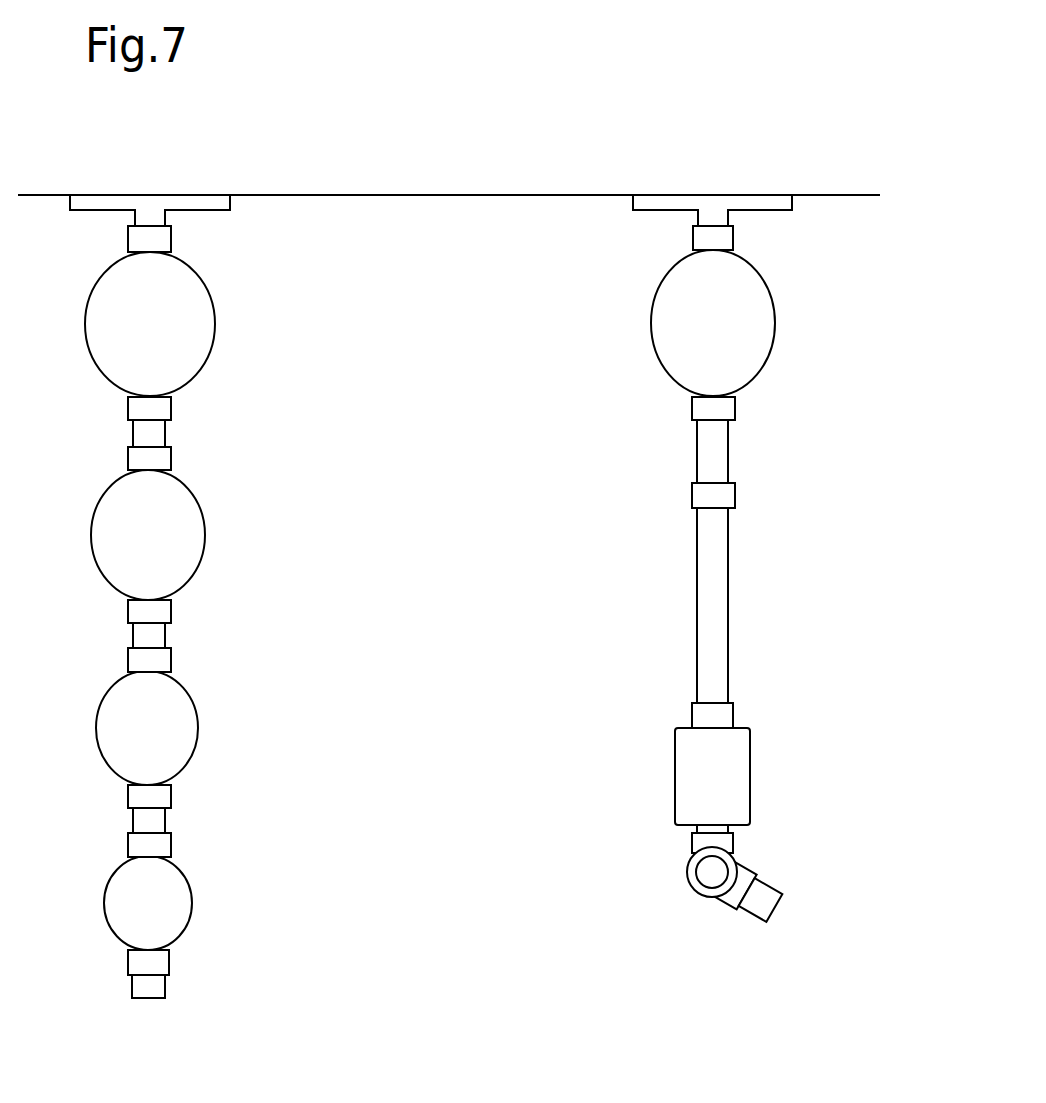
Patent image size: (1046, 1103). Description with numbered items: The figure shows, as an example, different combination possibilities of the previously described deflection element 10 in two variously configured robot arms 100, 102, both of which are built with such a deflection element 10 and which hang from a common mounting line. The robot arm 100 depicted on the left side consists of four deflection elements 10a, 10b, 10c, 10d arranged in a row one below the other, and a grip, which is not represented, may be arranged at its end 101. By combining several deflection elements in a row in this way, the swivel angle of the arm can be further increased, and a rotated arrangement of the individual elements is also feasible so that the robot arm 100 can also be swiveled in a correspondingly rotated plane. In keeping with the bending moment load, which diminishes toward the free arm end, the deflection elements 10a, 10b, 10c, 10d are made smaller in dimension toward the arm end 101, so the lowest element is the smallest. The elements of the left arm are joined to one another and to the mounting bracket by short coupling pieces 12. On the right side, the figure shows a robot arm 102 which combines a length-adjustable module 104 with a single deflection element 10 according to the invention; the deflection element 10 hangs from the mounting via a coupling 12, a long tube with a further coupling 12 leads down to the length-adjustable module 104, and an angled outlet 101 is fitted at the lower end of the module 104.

The robot arm 100 is at (172, 192).
The robot arm 102 is at (713, 192).
The deflection element 10 is at (775, 330).
The deflection element 10a is at (213, 330).
The deflection element 10b is at (205, 540).
The deflection element 10c is at (199, 731).
The deflection element 10d is at (192, 902).
The connecting piece / coupling 12 is at (153, 437).
The length-adjustable module 104 is at (750, 765).
The end 101 is at (140, 1000).